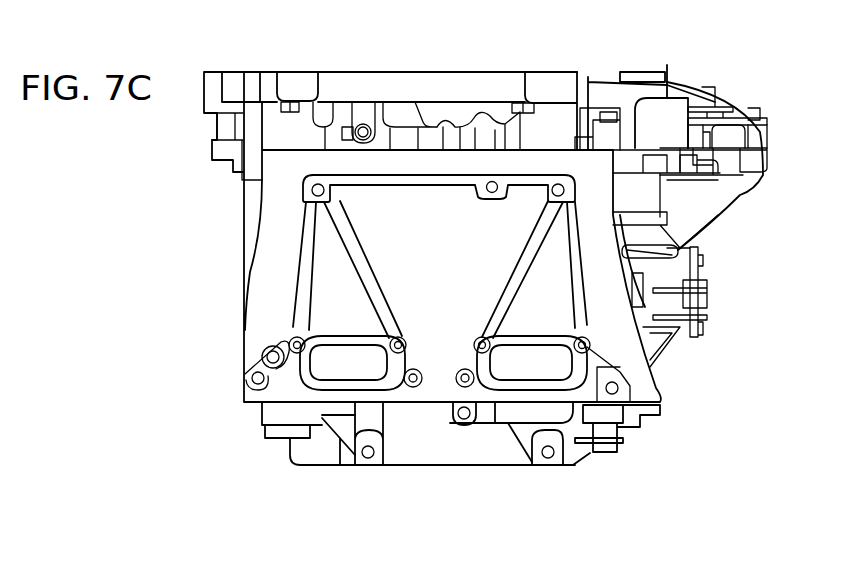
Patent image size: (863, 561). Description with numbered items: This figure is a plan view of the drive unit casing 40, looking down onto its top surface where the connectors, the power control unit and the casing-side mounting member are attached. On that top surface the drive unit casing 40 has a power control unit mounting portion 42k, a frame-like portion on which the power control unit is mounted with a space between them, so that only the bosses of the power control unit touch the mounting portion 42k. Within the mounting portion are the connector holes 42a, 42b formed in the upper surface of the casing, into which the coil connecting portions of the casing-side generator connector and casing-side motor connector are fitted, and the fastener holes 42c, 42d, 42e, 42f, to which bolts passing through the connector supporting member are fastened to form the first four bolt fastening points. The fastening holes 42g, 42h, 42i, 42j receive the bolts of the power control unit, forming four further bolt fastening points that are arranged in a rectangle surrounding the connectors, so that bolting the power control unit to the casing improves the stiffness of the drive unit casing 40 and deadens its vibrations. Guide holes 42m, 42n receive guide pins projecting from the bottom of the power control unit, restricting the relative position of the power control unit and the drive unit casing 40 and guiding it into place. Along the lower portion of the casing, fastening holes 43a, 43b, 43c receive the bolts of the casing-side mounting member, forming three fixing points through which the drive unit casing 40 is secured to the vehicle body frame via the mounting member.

The drive unit casing 40 is at (757, 189).
The connector hole 42a is at (350, 372).
The connector hole 42b is at (625, 366).
The fastener hole 42c is at (412, 388).
The fastener hole 42d is at (468, 388).
The fastener hole 42e is at (292, 343).
The fastener hole 42f is at (590, 343).
The fastening hole 42g is at (252, 379).
The fastening hole 42h is at (618, 388).
The fastening hole 42i is at (312, 190).
The fastening hole 42j is at (575, 190).
The power control unit mounting portion 42k is at (295, 263).
The guide hole 42m is at (266, 356).
The guide hole 42n is at (494, 181).
The fastening hole 43a is at (463, 420).
The fastening hole 43b is at (368, 460).
The fastening hole 43c is at (548, 460).